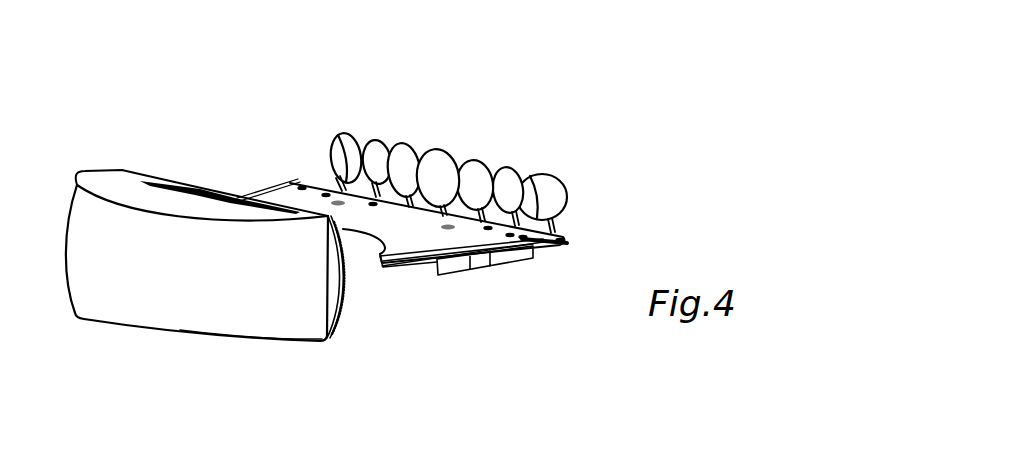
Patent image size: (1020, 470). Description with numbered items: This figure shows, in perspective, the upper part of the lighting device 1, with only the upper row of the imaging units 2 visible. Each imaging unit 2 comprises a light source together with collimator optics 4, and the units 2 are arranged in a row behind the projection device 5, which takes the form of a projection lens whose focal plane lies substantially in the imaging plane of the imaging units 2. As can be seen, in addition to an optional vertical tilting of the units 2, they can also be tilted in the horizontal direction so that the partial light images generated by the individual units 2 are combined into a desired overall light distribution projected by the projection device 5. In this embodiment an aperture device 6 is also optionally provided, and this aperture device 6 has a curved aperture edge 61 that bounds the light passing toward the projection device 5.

The lighting device 1 is at (202, 122).
The imaging unit 2 is at (381, 126).
The collimator optics 4 is at (316, 159).
The projection device 5 is at (297, 326).
The aperture device 6 is at (452, 296).
The curved aperture edge 61 is at (374, 238).